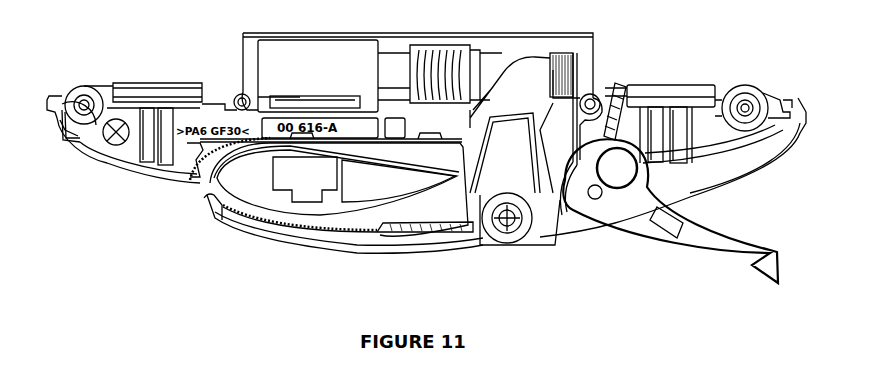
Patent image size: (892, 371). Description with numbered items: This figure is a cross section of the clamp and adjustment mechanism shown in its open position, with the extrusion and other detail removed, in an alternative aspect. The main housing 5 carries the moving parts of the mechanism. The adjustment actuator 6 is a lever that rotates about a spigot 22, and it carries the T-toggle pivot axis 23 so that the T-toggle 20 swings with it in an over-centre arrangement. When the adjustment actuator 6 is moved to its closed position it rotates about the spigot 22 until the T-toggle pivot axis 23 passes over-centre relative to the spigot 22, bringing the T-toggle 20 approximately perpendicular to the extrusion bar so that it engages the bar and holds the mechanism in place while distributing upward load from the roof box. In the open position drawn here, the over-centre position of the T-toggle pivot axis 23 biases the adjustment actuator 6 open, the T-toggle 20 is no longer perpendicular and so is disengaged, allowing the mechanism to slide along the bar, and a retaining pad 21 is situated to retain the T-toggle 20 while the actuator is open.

The handle 5 is at (236, 236).
The adjustment actuator 6 is at (720, 263).
The T-toggle 20 is at (622, 85).
The retaining pad 21 is at (687, 83).
The spigot 22 is at (618, 180).
The T-toggle pivot axis 23 is at (597, 199).